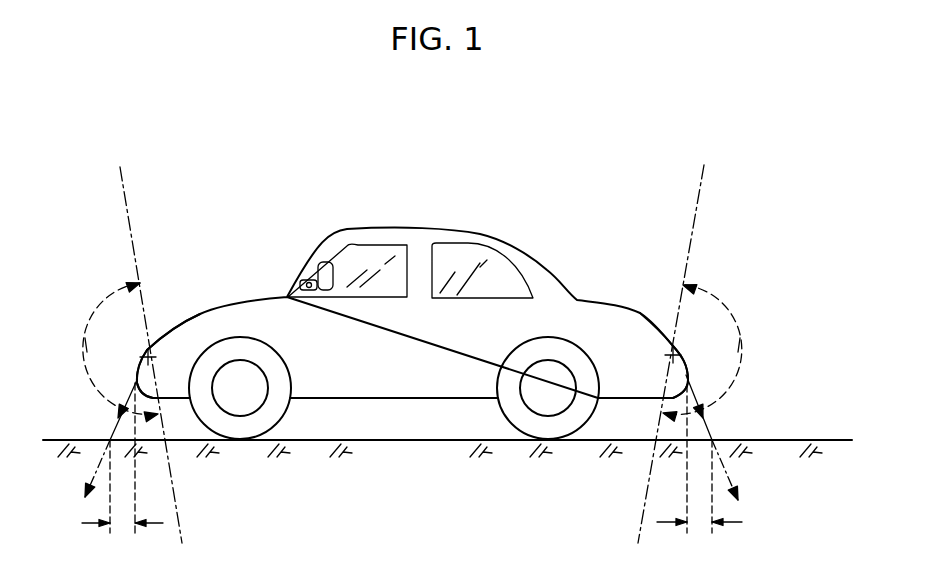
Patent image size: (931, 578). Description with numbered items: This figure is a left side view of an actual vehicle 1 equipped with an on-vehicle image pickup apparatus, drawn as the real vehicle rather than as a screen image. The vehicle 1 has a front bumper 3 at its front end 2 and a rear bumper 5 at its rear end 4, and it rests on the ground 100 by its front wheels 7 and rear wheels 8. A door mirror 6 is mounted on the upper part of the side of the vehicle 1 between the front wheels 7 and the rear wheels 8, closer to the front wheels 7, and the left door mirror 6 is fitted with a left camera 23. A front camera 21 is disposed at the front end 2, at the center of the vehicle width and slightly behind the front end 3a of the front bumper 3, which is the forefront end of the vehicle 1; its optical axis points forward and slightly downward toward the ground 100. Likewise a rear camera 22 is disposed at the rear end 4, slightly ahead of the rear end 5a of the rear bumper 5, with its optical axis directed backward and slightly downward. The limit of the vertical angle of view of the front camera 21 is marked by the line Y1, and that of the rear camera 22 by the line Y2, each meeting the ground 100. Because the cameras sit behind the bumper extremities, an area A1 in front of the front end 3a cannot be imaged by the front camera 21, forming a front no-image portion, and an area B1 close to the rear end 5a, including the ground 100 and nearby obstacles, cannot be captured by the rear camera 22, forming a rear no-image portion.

The vehicle 1 is at (550, 256).
The front end 2 is at (169, 343).
The front bumper 3 is at (140, 371).
The front end of the front bumper 3a is at (137, 375).
The rear end 4 is at (662, 345).
The rear bumper 5 is at (685, 366).
The rear end of the rear bumper 5a is at (689, 373).
The door mirror 6 is at (335, 278).
The front wheel 7 is at (240, 425).
The rear wheel 8 is at (558, 425).
The front camera 21 is at (147, 357).
The rear camera 22 is at (683, 352).
The left camera 23 is at (308, 278).
The ground 100 is at (826, 440).
The limit of the angle of view α1 Y1 is at (122, 180).
The limit of the angle of view α2 Y2 is at (702, 180).
The area in front of the front end (front no-image portion) A1 is at (122, 473).
The rear no-image portion B1 is at (699, 474).